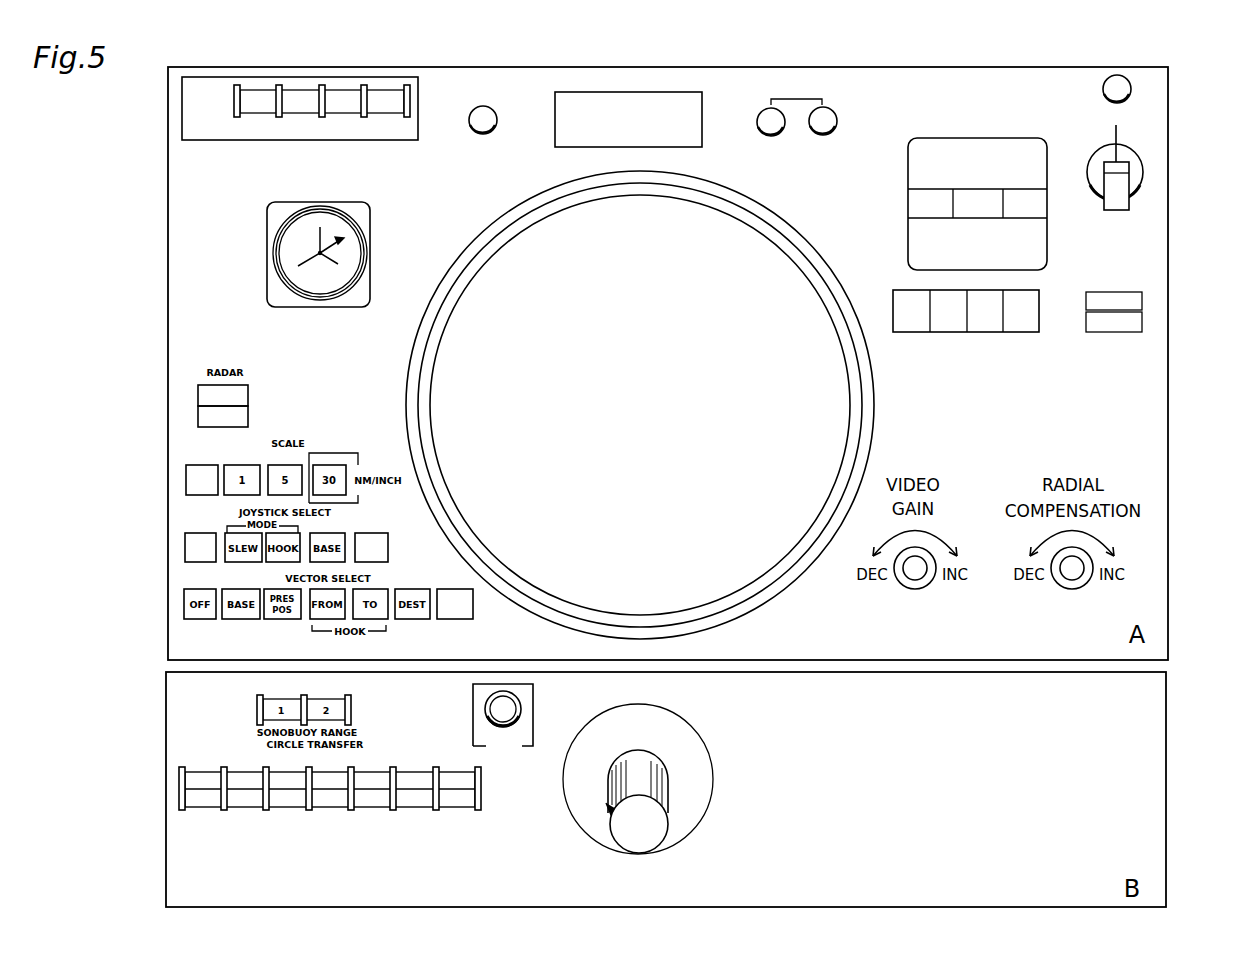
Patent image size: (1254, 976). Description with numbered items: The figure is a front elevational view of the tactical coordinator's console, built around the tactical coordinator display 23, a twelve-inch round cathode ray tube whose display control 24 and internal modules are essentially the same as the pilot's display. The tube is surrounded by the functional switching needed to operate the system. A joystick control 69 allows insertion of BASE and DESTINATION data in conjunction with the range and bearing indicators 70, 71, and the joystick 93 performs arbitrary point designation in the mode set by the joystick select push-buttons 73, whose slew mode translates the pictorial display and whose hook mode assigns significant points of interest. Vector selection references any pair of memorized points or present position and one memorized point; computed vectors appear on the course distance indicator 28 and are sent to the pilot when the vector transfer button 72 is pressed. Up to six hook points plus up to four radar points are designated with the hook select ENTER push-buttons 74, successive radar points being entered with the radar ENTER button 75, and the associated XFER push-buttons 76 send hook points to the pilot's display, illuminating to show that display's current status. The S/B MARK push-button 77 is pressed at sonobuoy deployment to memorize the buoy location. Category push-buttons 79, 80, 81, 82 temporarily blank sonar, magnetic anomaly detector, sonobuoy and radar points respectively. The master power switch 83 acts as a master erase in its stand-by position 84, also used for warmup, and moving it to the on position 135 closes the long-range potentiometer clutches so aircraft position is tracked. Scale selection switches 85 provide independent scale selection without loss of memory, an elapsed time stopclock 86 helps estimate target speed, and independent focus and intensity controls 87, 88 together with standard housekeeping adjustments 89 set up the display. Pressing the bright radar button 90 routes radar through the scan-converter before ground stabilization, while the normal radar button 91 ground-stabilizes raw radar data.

The tactical coordinator display 23 is at (448, 270).
The display control 24 is at (237, 140).
The course distance indicator 28 is at (908, 248).
The joystick control 69 is at (185, 549).
The range indicator 70 is at (950, 189).
The bearing indicator 71 is at (1039, 290).
The vector transfer button 72 is at (473, 619).
The joystick select push-buttons 73 is at (385, 533).
The hook select ENTER push-buttons 74 is at (197, 772).
The radar ENTER button 75 is at (475, 780).
The XFER push-buttons 76 is at (238, 810).
The S/B MARK push-button 77 is at (521, 709).
The sonar category push-button 79 is at (260, 117).
The magnetic anomaly detector category push-button 80 is at (290, 117).
The sonobuoy category push-button 81 is at (352, 117).
The radar category push-button 82 is at (388, 117).
The master power switch 83 is at (1103, 203).
The stand-by position 84 is at (1101, 92).
The scale selection switches 85 is at (203, 465).
The elapsed time stopclock 86 is at (370, 232).
The focus control 87 is at (484, 134).
The intensity controls 88 is at (822, 99).
The housekeeping adjustments 89 is at (558, 147).
The bright radar button 90 is at (248, 396).
The normal radar button 91 is at (248, 416).
The joystick 93 is at (668, 812).
The on position 135 is at (1158, 129).